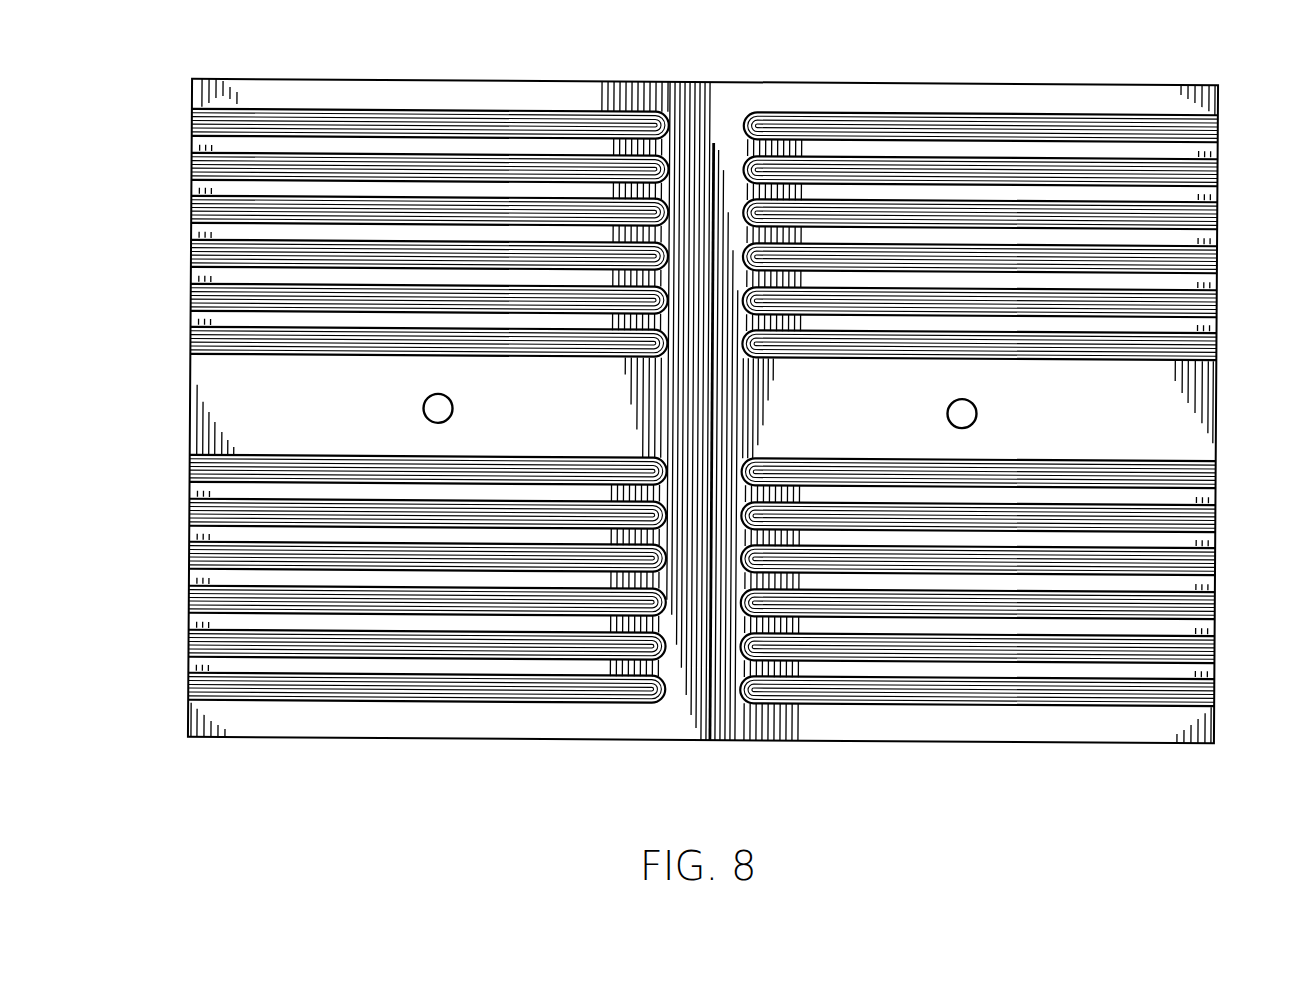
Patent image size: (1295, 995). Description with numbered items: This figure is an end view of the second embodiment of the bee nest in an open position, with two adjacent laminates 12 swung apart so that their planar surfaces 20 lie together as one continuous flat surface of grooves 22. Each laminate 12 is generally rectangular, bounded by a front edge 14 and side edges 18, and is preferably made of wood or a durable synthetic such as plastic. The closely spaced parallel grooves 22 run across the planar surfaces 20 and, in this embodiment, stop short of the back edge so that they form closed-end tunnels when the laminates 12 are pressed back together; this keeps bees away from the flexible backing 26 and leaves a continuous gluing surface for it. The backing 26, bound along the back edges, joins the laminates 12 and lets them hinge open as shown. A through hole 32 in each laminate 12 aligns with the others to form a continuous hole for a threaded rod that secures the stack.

The laminate 12 is at (770, 90).
The front edge 14 is at (190, 572).
The side edges 18 is at (471, 80).
The planar surfaces 20 is at (190, 233).
The grooves 22 is at (190, 302).
The flexible backing 26 is at (703, 742).
The through hole 32 is at (441, 407).